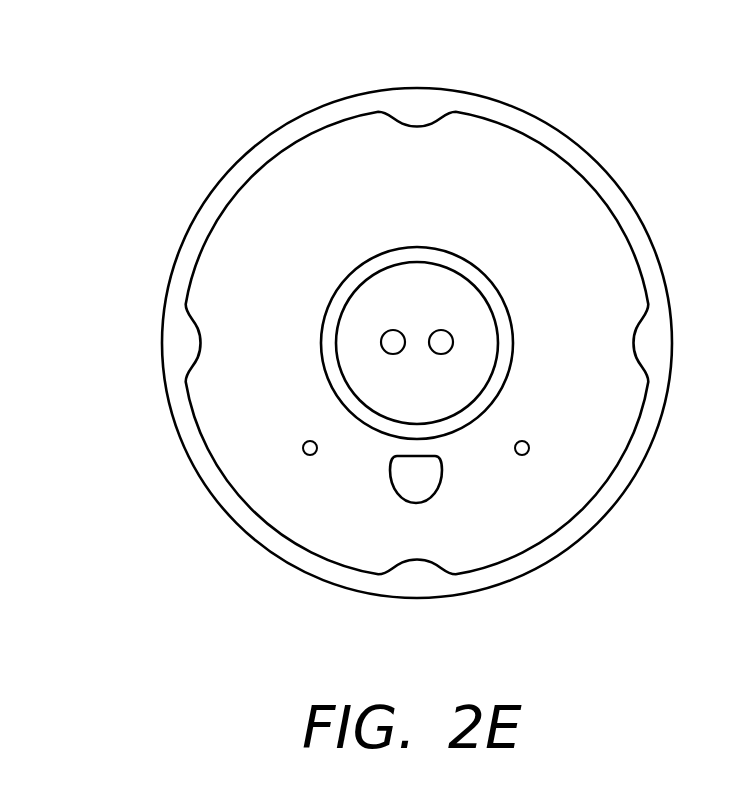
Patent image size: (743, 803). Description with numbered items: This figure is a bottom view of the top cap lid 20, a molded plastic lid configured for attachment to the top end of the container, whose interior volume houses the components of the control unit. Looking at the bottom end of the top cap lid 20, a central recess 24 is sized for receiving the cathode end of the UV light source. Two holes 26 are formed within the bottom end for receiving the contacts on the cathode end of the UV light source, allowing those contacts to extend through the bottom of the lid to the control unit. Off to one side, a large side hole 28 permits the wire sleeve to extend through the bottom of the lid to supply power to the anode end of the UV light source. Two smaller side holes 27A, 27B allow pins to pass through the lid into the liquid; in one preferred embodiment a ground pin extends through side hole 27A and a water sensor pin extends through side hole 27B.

The top cap lid 20 is at (198, 80).
The recess 24 is at (422, 297).
The holes 26 is at (397, 338).
The side hole 27A is at (305, 453).
The side hole 27B is at (525, 455).
The large side hole 28 is at (415, 475).